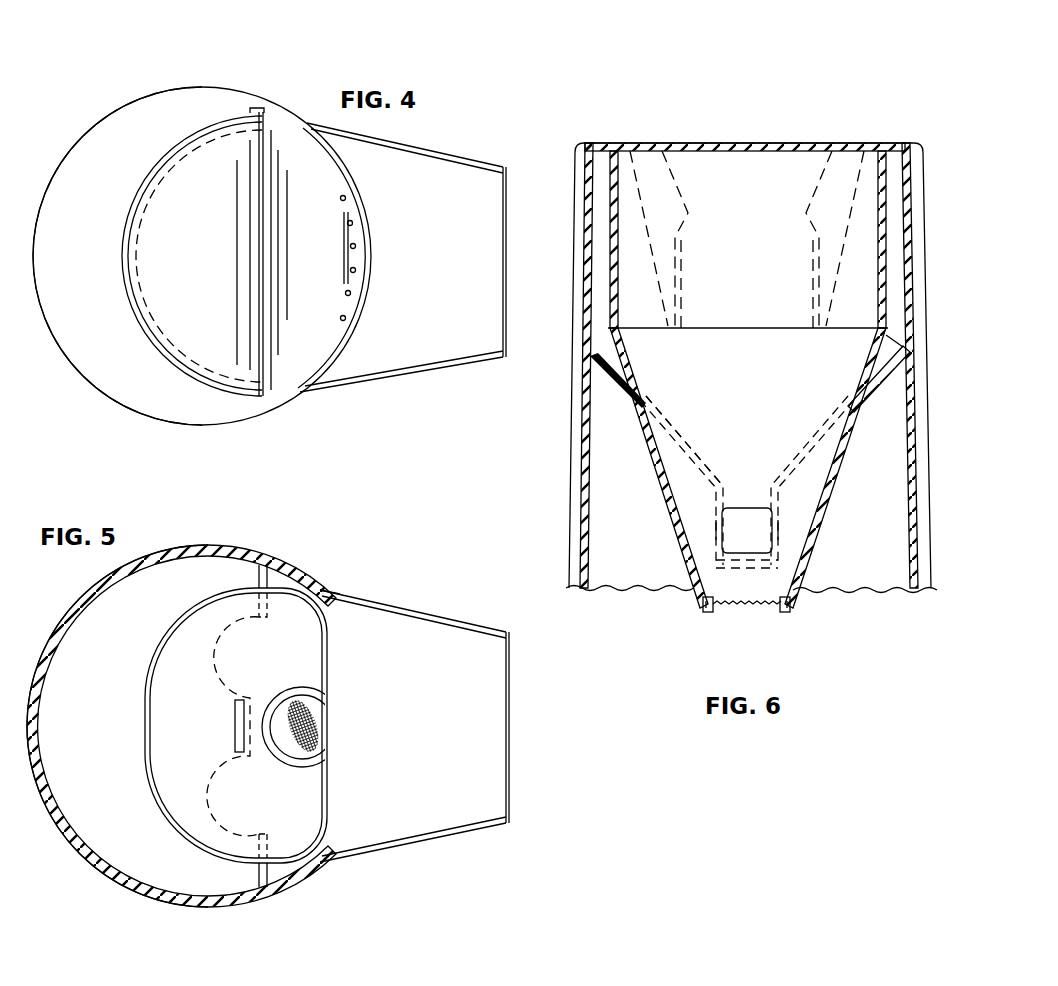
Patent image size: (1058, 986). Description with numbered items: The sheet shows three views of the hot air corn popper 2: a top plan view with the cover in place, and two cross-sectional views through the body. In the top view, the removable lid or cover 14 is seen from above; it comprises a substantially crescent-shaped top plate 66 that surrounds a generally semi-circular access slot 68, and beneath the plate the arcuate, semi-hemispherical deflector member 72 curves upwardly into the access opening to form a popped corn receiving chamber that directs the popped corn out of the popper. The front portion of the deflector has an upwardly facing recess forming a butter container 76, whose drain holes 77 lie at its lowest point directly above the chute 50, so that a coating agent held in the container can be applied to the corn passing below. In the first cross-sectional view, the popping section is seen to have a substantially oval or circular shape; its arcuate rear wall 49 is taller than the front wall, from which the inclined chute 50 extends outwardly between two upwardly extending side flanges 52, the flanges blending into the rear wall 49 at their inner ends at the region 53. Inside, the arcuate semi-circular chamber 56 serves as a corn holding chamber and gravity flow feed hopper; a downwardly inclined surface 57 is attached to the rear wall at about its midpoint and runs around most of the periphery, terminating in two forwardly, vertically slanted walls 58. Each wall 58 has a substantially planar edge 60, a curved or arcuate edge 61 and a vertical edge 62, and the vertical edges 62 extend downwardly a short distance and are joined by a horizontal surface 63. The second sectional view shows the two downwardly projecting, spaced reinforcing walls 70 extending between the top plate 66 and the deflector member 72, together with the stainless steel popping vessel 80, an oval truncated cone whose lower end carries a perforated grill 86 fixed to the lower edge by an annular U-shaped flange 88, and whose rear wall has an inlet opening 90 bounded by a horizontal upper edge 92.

In FIG. 4, the cover 14 is at (224, 87).
In FIG. 6, the cover 14 is at (605, 137).
In FIG. 5, the corn popper 2 is at (279, 548).
In FIG. 5, the rear wall 49 is at (192, 556).
In FIG. 4, the chute 50 is at (450, 261).
In FIG. 5, the chute 50 is at (493, 733).
In FIG. 5, the side flanges 52 is at (368, 606).
In FIG. 5, the blend region 53 is at (298, 595).
In FIG. 5, the arcuate semi-circular chamber 56 is at (110, 626).
In FIG. 6, the arcuate semi-circular chamber 56 is at (608, 354).
In FIG. 5, the inclined surface 57 is at (104, 719).
In FIG. 5, the vertically slanted walls 58 is at (268, 617).
In FIG. 6, the vertically slanted walls 58 is at (612, 391).
In FIG. 5, the planar edge 60 is at (257, 580).
In FIG. 6, the planar edge 60 is at (644, 424).
In FIG. 5, the arcuate edge 61 is at (230, 665).
In FIG. 6, the arcuate edge 61 is at (677, 440).
In FIG. 6, the vertical edge 62 is at (716, 538).
In FIG. 6, the horizontal surface 63 is at (760, 568).
In FIG. 4, the top plate 66 is at (101, 279).
In FIG. 6, the top plate 66 is at (898, 143).
In FIG. 4, the access slot 68 is at (165, 218).
In FIG. 6, the reinforcing walls 70 is at (684, 186).
In FIG. 5, the deflector member 72 is at (144, 748).
In FIG. 6, the deflector member 72 is at (735, 143).
In FIG. 4, the butter container 76 is at (293, 154).
In FIG. 4, the drain holes 77 is at (348, 291).
In FIG. 6, the popping vessel 80 is at (656, 490).
In FIG. 6, the grill 86 is at (754, 608).
In FIG. 6, the U-shaped flange 88 is at (708, 612).
In FIG. 6, the inlet opening 90 is at (775, 532).
In FIG. 6, the upper edge 92 is at (747, 530).